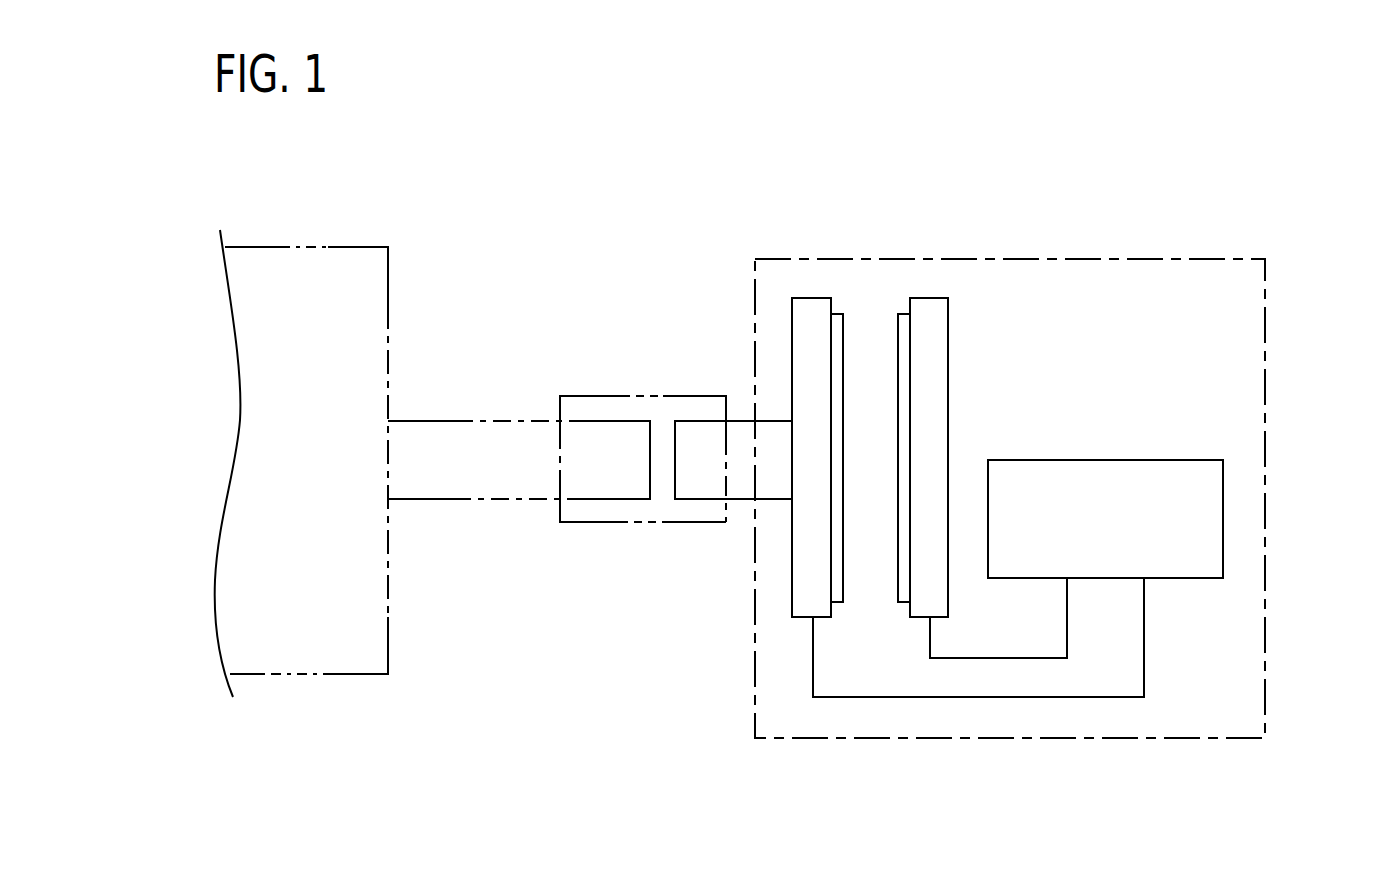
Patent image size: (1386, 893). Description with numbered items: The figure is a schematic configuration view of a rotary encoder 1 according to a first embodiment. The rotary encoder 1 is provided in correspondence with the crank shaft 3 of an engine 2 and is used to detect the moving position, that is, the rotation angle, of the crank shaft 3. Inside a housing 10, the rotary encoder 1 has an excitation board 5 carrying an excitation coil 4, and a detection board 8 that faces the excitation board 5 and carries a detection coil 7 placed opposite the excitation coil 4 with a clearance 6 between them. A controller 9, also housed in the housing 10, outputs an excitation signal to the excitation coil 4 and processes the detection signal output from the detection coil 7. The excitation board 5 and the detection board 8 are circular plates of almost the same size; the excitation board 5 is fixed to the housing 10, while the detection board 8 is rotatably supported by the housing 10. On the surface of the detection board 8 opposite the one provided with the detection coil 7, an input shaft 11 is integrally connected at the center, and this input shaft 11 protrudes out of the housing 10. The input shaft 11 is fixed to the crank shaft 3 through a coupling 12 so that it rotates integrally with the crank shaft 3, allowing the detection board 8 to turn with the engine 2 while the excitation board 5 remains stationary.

The rotary encoder 1 is at (1057, 458).
The engine 2 is at (280, 247).
The crank shaft 3 is at (438, 421).
The excitation coil 4 is at (903, 318).
The excitation board 5 is at (928, 302).
The clearance 6 is at (868, 343).
The detection coil 7 is at (837, 322).
The detection board 8 is at (810, 303).
The controller 9 is at (1110, 465).
The housing 10 is at (1265, 353).
The input shaft 11 is at (698, 499).
The coupling 12 is at (607, 396).